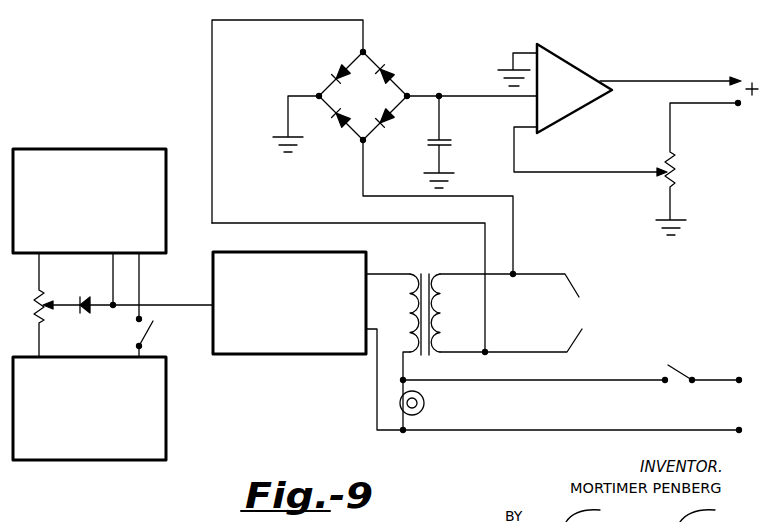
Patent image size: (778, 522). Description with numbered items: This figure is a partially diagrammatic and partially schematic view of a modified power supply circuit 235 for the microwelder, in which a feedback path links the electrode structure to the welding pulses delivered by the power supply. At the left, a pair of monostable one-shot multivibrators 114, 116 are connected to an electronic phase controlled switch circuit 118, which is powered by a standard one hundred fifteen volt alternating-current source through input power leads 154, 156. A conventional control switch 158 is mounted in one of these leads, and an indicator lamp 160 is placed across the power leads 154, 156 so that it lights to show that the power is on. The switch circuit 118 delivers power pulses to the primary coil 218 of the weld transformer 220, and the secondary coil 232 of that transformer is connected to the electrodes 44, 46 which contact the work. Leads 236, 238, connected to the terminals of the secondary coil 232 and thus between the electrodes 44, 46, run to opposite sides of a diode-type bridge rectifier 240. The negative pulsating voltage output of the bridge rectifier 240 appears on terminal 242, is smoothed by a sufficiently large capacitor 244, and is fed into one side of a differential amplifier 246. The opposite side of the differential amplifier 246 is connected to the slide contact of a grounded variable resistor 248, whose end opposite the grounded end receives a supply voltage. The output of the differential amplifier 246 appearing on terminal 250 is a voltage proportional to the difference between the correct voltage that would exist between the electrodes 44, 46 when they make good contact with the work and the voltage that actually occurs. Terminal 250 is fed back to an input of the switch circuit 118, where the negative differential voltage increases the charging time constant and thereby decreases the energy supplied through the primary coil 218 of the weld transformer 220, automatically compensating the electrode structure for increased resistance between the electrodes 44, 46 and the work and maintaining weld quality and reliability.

The monostable one-shot multivibrator 114 is at (158, 152).
The monostable one-shot multivibrator 116 is at (154, 357).
The phase controlled switch circuit 118 is at (223, 253).
The modified power supply circuit 235 is at (138, 127).
The lead 236 is at (419, 195).
The lead 238 is at (419, 222).
The bridge rectifier 240 is at (370, 53).
The terminal 242 is at (406, 92).
The capacitor 244 is at (440, 137).
The differential amplifier 246 is at (558, 52).
The variable resistor 248 is at (674, 159).
The terminal 250 is at (598, 68).
The primary coil 218 is at (405, 301).
The weld transformer 220 is at (425, 274).
The secondary coil 232 is at (443, 301).
The electrode 44 is at (519, 272).
The electrode 46 is at (521, 351).
The input power lead 154 is at (637, 378).
The input power lead 156 is at (637, 428).
The control switch 158 is at (680, 371).
The indicator lamp 160 is at (425, 402).